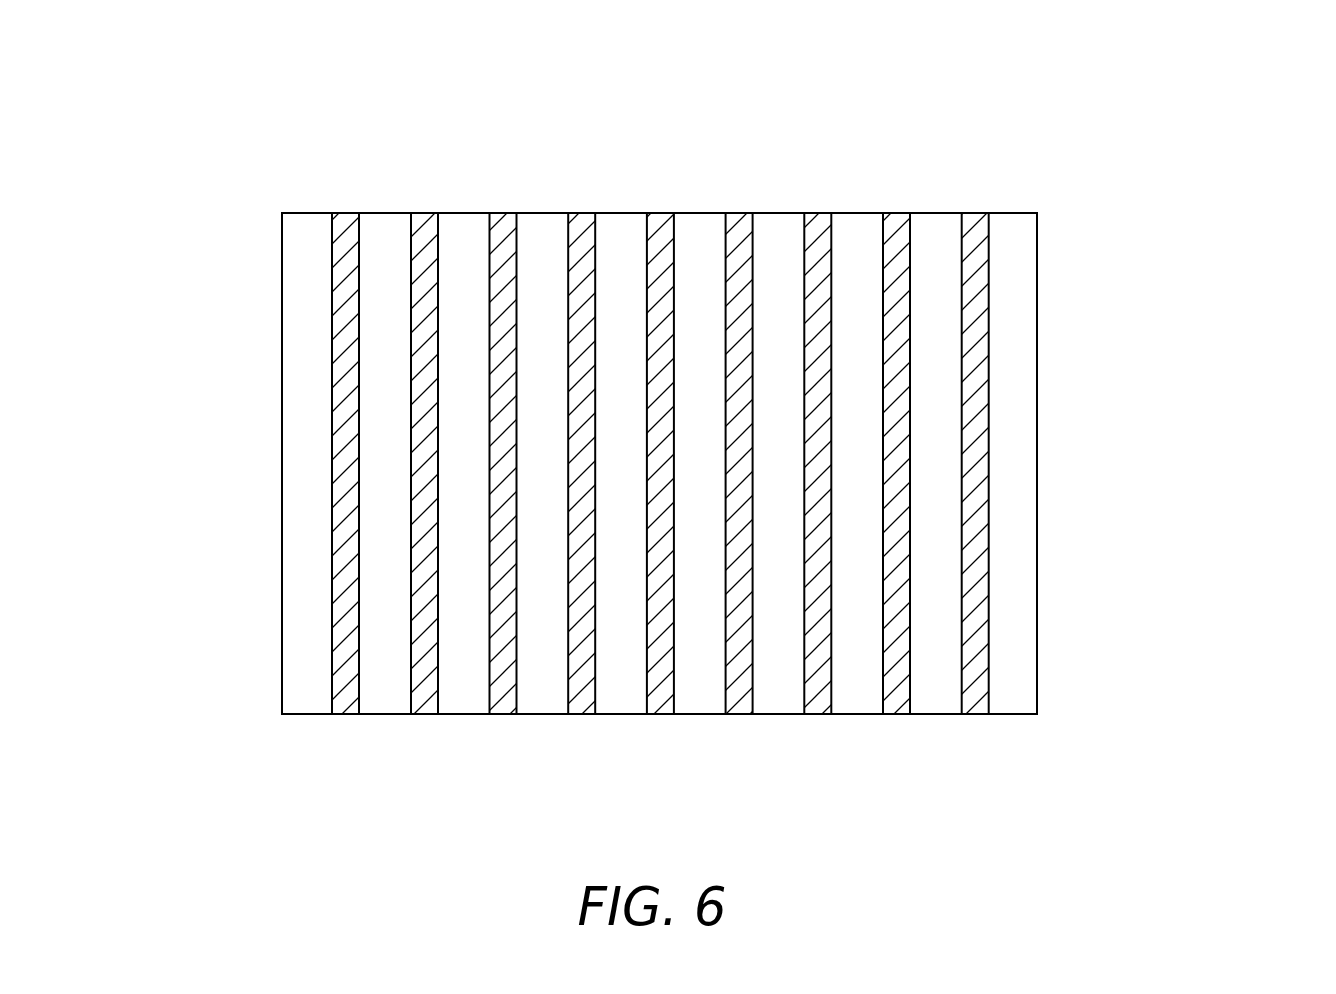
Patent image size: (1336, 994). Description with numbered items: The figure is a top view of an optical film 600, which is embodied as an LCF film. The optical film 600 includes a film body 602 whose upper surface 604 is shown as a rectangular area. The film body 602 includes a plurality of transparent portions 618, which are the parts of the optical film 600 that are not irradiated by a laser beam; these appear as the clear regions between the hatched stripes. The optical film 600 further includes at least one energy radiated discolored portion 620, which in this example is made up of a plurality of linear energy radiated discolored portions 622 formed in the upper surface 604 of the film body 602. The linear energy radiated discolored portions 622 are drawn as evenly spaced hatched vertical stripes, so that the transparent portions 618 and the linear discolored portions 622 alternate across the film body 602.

The optical film 600 is at (1225, 105).
The film body 602 is at (1113, 257).
The upper surface 604 is at (332, 330).
The transparent portions 618 is at (543, 458).
The energy radiated discolored portion 620 is at (428, 207).
The linear energy radiated discolored portions 622 is at (502, 705).